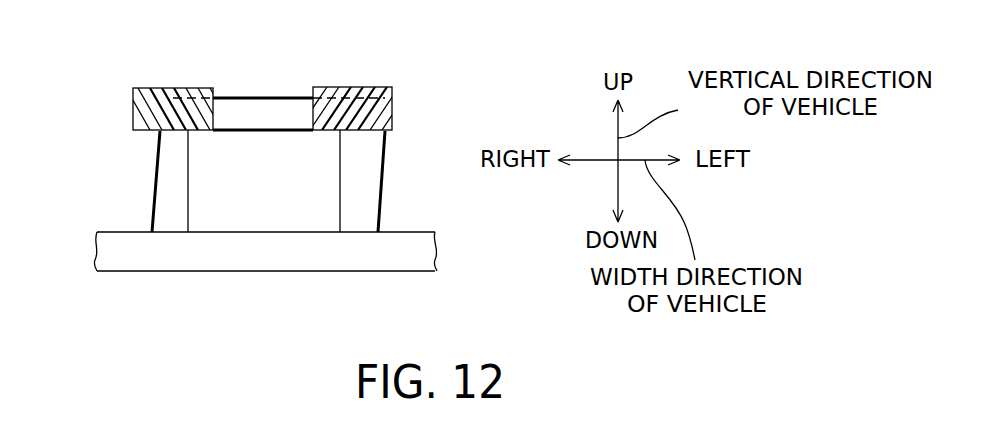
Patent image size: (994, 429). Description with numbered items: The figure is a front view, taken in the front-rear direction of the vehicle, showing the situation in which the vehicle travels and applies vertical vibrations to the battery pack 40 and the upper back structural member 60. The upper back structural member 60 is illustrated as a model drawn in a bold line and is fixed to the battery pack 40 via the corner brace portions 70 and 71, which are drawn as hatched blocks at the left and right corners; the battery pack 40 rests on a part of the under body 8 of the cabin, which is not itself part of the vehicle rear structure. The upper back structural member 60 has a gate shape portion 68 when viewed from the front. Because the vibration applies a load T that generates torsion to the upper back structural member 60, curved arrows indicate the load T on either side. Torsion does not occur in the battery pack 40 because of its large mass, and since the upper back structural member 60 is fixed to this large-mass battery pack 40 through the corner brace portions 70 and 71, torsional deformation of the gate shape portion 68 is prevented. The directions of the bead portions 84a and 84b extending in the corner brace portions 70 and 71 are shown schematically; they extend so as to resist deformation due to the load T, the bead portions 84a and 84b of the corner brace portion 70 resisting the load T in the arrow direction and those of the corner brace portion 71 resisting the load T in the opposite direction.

The under body 8 is at (427, 250).
The battery pack 40 is at (273, 197).
The upper back structural member 60 is at (283, 135).
The gate shape portion 68 is at (382, 197).
The corner brace portion 70 is at (133, 113).
The corner brace portion 71 is at (393, 113).
The bead portion 84a is at (163, 88).
The bead portion 84b is at (138, 92).
The load T is at (74, 76).